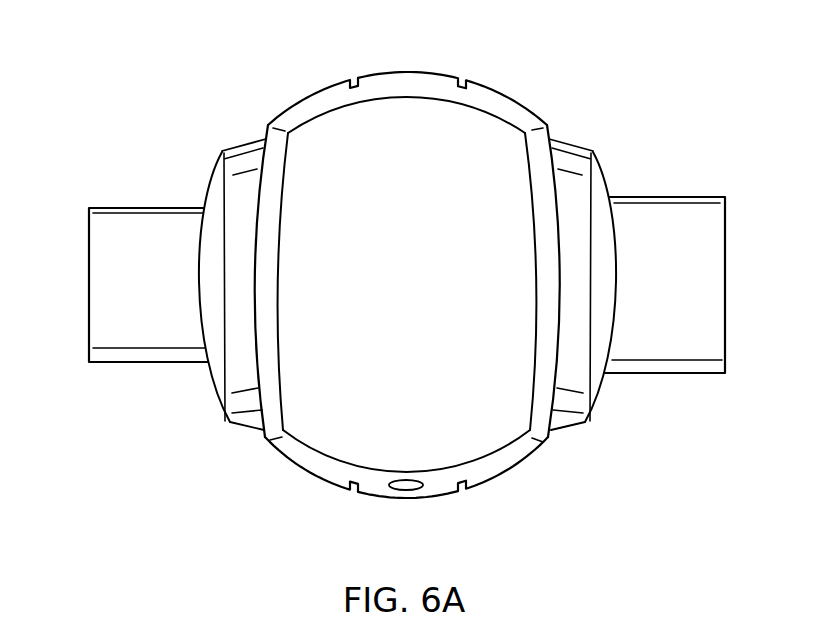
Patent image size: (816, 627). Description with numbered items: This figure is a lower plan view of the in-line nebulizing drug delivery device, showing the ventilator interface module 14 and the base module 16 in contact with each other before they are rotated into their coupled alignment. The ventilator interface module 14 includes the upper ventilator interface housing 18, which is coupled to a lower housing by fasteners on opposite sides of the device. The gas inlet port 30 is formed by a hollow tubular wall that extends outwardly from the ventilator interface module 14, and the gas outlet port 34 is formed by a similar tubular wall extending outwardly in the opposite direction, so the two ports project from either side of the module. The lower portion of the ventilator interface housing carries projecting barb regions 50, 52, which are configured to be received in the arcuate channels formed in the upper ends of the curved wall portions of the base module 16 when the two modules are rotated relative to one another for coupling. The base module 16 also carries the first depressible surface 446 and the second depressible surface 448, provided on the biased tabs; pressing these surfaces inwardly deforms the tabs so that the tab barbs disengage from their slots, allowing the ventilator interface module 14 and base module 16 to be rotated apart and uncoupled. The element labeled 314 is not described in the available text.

The ventilator interface module 14 is at (424, 284).
The base module 16 is at (409, 284).
The upper ventilator interface housing 18 is at (600, 394).
The gas inlet port 30 is at (86, 283).
The gas outlet port 34 is at (727, 288).
The projecting barb region 50 is at (628, 266).
The projecting barb region 52 is at (198, 251).
The tab 314 is at (572, 182).
The first depressible surface 446 is at (413, 71).
The second depressible surface 448 is at (373, 496).